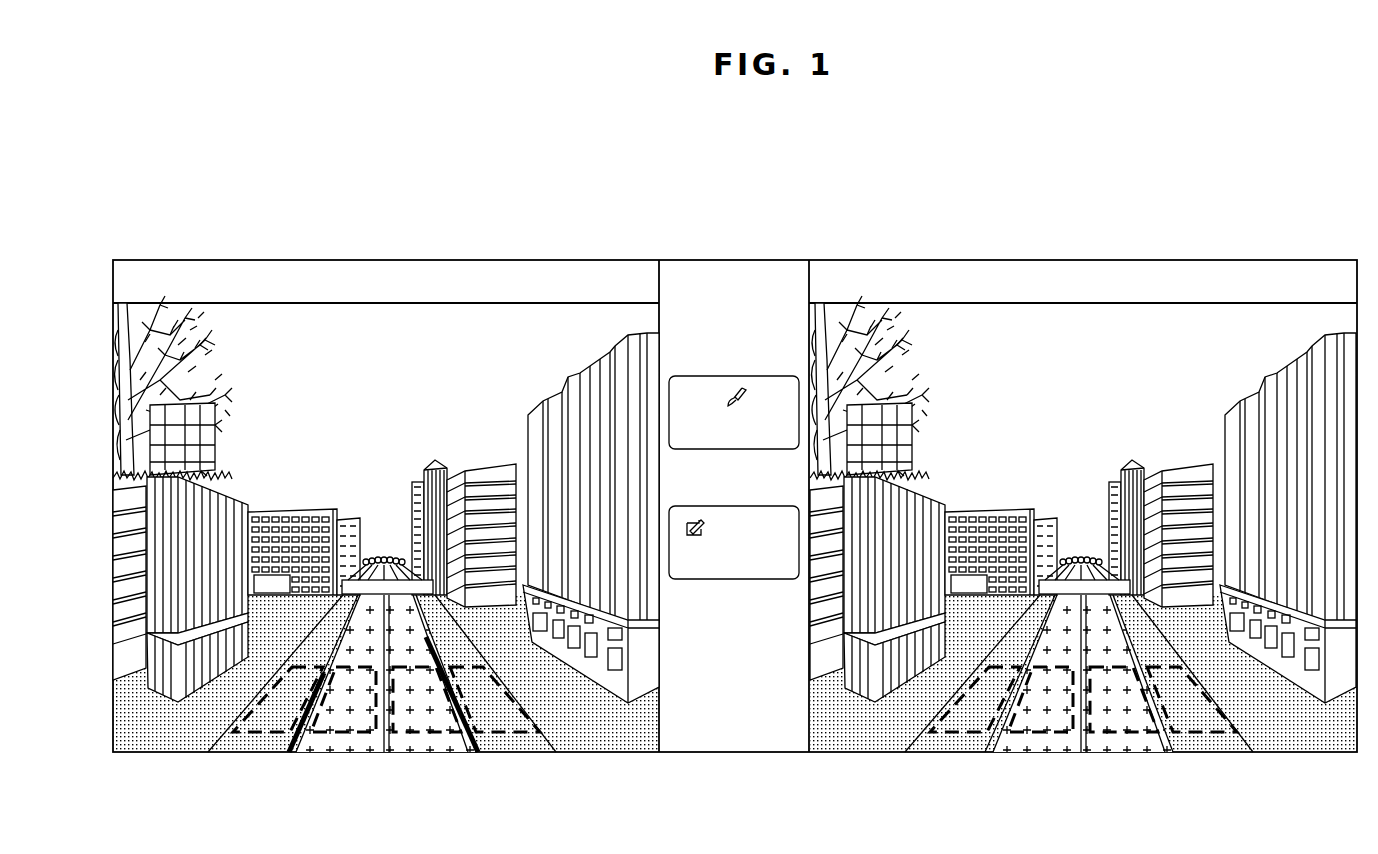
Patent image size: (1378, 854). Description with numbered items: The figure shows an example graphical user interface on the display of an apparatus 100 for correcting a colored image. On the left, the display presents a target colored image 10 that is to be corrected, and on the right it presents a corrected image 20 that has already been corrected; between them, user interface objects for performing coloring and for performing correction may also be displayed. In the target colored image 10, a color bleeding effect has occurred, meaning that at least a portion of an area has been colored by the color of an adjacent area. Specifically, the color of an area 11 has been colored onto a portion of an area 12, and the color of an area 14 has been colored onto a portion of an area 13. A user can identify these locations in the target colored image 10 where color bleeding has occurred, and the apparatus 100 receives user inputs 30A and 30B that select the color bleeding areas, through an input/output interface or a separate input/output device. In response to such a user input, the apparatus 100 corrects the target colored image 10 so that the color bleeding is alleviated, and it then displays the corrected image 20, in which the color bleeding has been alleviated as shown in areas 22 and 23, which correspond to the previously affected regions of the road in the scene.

The apparatus for correcting a colored image 100 is at (715, 200).
The target colored image 10 is at (577, 302).
The corrected image 20 is at (1237, 302).
The area 11 is at (253, 734).
The area 12 is at (343, 734).
The area 13 is at (430, 734).
The area 14 is at (512, 734).
The area 22 is at (1042, 734).
The area 23 is at (1127, 734).
The user input 30A is at (337, 652).
The user input 30B is at (433, 652).